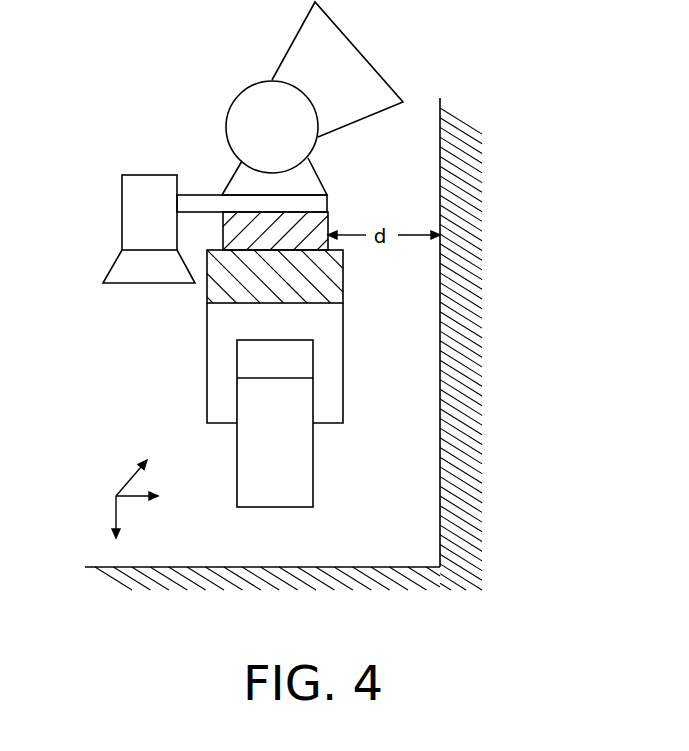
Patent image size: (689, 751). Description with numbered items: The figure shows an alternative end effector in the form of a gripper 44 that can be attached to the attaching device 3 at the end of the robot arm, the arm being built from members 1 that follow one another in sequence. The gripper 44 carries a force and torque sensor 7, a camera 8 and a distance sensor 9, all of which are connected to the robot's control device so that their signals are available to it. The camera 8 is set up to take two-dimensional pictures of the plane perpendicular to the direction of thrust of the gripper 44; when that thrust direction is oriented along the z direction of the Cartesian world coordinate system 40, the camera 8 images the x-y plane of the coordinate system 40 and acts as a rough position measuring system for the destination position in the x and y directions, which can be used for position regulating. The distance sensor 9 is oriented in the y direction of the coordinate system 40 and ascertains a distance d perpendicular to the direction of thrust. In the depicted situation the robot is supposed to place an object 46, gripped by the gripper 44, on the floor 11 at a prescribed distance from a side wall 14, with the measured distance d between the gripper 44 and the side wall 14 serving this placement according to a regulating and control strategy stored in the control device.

The members 1 is at (298, 53).
The attaching device 3 is at (237, 187).
The force and torque sensor 7 is at (213, 288).
The camera 8 is at (142, 224).
The distance sensor 9 is at (300, 228).
The floor 11 is at (368, 567).
The side wall 14 is at (440, 440).
The Cartesian world coordinate system 40 is at (115, 492).
The gripper 44 is at (333, 350).
The object 46 is at (292, 461).